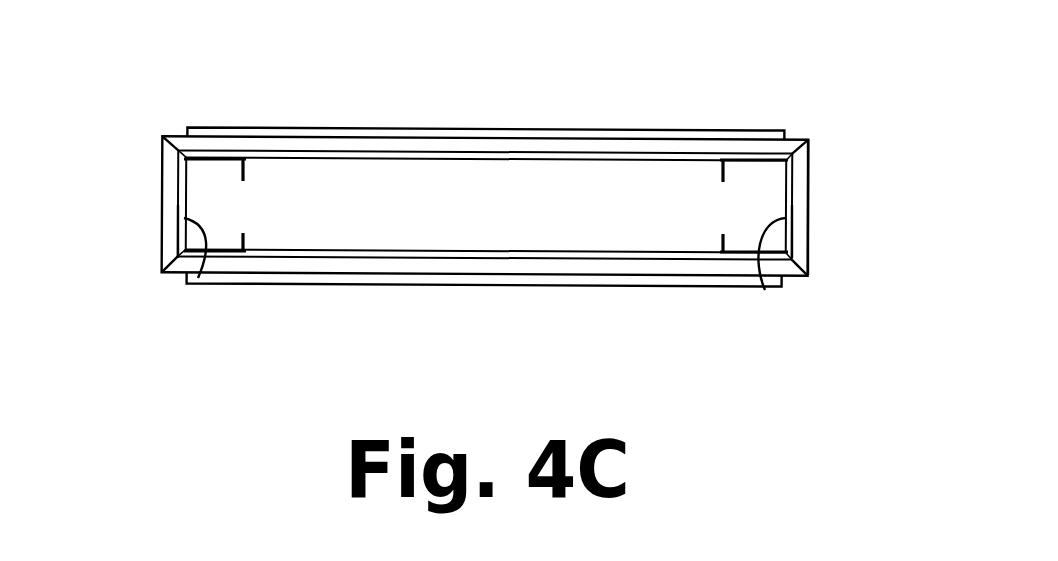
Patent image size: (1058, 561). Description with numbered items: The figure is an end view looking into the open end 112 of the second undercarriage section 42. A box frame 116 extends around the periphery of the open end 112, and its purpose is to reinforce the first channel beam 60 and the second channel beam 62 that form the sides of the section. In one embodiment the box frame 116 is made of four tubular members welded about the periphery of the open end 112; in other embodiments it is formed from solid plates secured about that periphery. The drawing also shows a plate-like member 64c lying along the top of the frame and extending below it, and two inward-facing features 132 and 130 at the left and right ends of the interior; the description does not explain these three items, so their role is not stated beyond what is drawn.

The second undercarriage section 42 is at (120, 207).
The open end 112 is at (799, 112).
The box frame 116 is at (809, 197).
The cover plate 64c is at (645, 130).
The left retaining clip 132 is at (283, 216).
The right retaining clip 130 is at (702, 217).
The second channel beam 62 is at (198, 278).
The first channel beam 60 is at (765, 290).